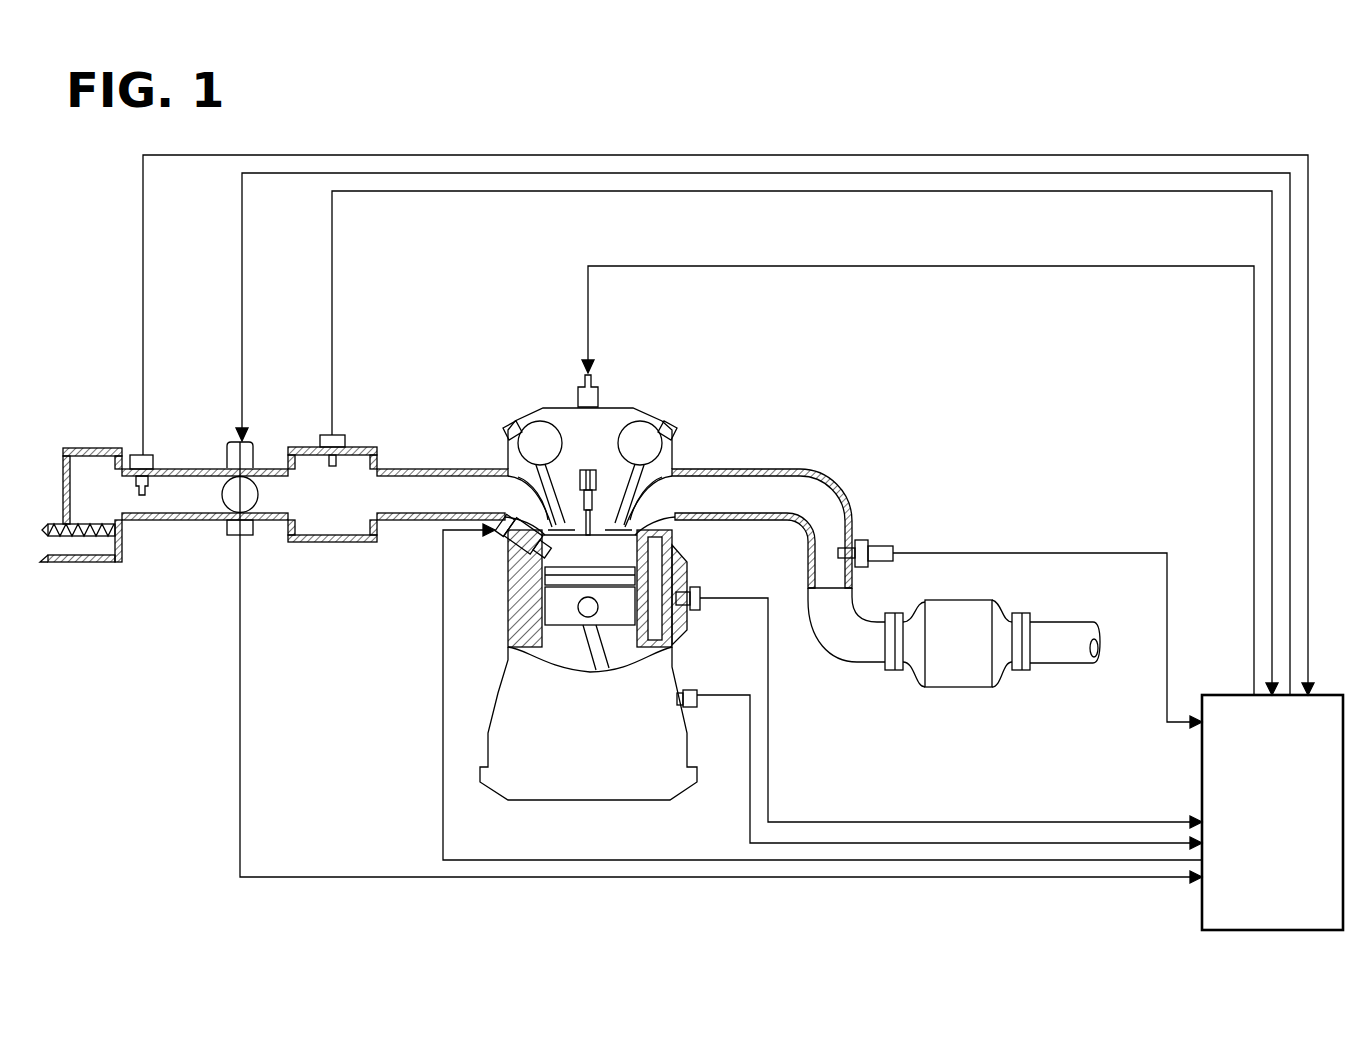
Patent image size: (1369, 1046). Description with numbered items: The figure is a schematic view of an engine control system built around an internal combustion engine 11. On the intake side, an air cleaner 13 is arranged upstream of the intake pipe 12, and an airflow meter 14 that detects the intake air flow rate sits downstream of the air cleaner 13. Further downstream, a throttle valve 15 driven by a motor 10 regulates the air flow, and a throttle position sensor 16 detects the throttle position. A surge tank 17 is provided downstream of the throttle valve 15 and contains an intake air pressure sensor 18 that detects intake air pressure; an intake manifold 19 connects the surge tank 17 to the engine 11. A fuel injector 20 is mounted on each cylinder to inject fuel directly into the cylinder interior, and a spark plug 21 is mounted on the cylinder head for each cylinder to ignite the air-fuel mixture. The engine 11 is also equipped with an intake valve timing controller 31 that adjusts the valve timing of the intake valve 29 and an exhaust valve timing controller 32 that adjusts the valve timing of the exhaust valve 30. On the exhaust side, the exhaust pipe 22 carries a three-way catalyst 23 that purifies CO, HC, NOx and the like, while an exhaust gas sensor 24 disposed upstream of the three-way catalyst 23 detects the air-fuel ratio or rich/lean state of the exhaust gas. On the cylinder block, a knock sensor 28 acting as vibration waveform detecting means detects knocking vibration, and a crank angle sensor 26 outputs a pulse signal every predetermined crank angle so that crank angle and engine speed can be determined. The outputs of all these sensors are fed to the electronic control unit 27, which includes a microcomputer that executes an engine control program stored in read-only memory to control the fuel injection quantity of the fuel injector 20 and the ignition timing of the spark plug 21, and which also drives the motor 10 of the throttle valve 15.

The motor 10 is at (253, 465).
The internal combustion engine 11 is at (645, 410).
The intake pipe 12 is at (178, 469).
The air cleaner 13 is at (100, 545).
The airflow meter 14 is at (138, 455).
The throttle valve 15 is at (250, 496).
The throttle position sensor 16 is at (232, 535).
The surge tank 17 is at (297, 447).
The intake air pressure sensor 18 is at (340, 435).
The intake manifold 19 is at (402, 469).
The fuel injector 20 is at (503, 562).
The spark plug 21 is at (605, 470).
The exhaust pipe 22 is at (790, 469).
The three-way catalyst 23 is at (973, 601).
The exhaust gas sensor 24 is at (863, 530).
The crank angle sensor 26 is at (690, 688).
The electronic control unit 27 is at (1202, 905).
The knock sensor 28 is at (700, 588).
The intake valve 29 is at (512, 520).
The exhaust valve 30 is at (665, 503).
The intake valve timing controller 31 is at (537, 412).
The exhaust valve timing controller 32 is at (650, 420).